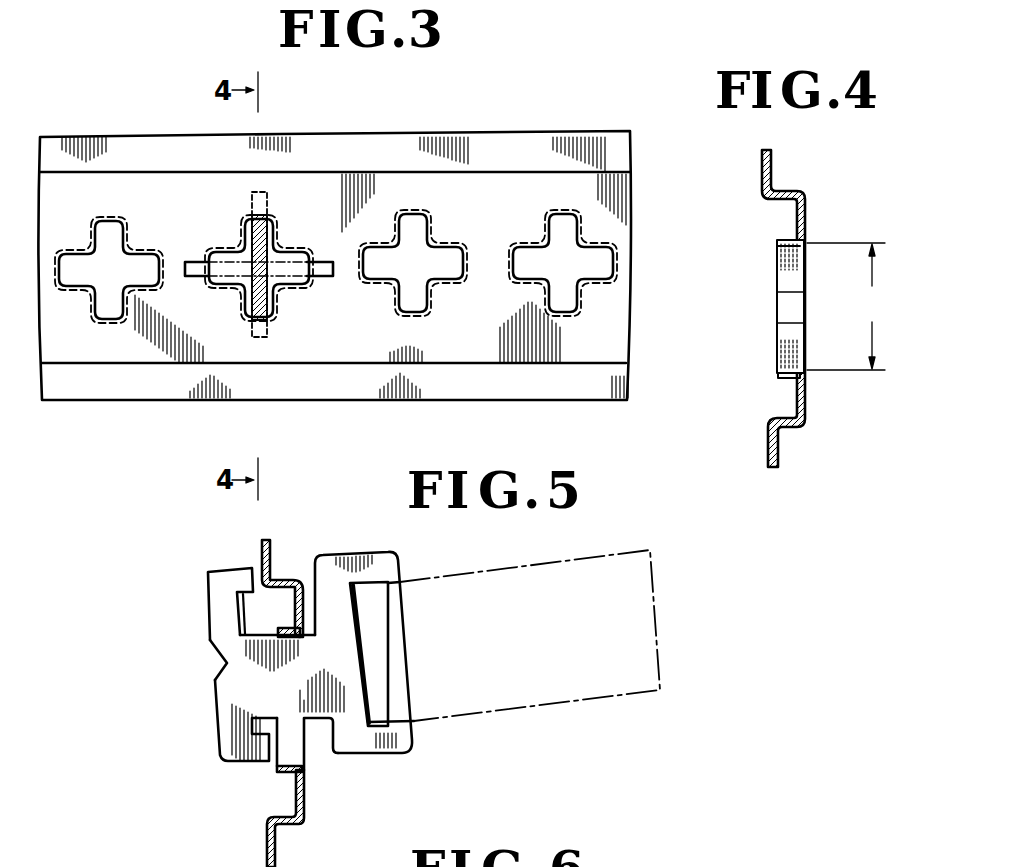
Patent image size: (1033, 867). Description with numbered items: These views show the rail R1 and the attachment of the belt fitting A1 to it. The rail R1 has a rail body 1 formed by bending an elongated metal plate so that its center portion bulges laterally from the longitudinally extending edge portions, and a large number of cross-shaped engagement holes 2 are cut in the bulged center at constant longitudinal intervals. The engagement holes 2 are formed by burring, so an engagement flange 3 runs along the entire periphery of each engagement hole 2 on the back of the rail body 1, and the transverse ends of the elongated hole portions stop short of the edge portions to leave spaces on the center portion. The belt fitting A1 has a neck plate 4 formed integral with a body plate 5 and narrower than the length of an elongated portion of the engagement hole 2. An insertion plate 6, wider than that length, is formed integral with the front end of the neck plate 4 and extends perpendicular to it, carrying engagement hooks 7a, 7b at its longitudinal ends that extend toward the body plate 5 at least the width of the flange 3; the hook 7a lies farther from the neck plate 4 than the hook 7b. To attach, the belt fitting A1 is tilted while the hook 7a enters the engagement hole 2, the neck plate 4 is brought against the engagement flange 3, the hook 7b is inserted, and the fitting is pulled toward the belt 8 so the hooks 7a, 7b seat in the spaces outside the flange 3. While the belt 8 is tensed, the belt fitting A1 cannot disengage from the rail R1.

In FIG. 4, the rail body 1 is at (792, 428).
In FIG. 5, the rail body 1 is at (305, 805).
In FIG. 3, the cross-shaped engagement hole 2 is at (111, 307).
In FIG. 4, the cross-shaped engagement hole 2 is at (787, 302).
In FIG. 5, the cross-shaped engagement hole 2 is at (293, 747).
In FIG. 3, the engagement flange 3 is at (92, 300).
In FIG. 4, the engagement flange 3 is at (793, 382).
In FIG. 5, the engagement flange 3 is at (283, 777).
In FIG. 5, the neck plate 4 is at (312, 693).
In FIG. 5, the body plate 5 is at (383, 742).
In FIG. 5, the insertion plate 6 is at (232, 697).
In FIG. 5, the engagement hook 7a is at (220, 598).
In FIG. 5, the engagement hook 7b is at (235, 765).
In FIG. 5, the belt 8 is at (610, 700).
In FIG. 3, the belt fitting A1 is at (271, 303).
In FIG. 5, the belt fitting A1 is at (325, 690).
In FIG. 3, the rail R1 is at (510, 120).
In FIG. 4, the rail R1 is at (792, 324).
In FIG. 5, the rail R1 is at (292, 690).